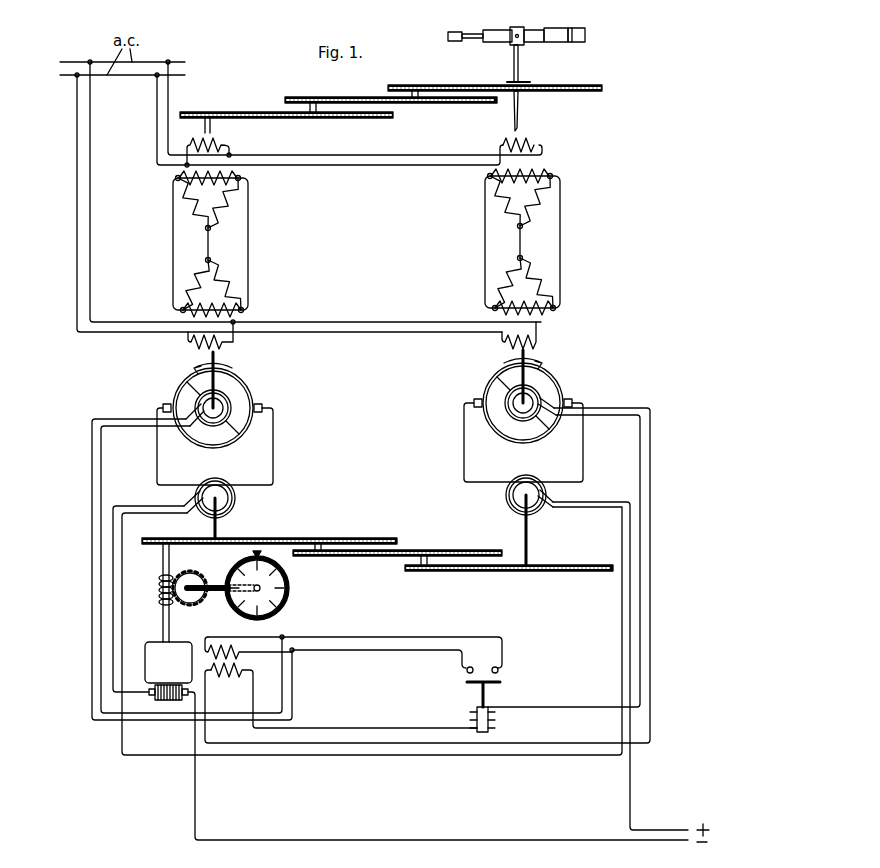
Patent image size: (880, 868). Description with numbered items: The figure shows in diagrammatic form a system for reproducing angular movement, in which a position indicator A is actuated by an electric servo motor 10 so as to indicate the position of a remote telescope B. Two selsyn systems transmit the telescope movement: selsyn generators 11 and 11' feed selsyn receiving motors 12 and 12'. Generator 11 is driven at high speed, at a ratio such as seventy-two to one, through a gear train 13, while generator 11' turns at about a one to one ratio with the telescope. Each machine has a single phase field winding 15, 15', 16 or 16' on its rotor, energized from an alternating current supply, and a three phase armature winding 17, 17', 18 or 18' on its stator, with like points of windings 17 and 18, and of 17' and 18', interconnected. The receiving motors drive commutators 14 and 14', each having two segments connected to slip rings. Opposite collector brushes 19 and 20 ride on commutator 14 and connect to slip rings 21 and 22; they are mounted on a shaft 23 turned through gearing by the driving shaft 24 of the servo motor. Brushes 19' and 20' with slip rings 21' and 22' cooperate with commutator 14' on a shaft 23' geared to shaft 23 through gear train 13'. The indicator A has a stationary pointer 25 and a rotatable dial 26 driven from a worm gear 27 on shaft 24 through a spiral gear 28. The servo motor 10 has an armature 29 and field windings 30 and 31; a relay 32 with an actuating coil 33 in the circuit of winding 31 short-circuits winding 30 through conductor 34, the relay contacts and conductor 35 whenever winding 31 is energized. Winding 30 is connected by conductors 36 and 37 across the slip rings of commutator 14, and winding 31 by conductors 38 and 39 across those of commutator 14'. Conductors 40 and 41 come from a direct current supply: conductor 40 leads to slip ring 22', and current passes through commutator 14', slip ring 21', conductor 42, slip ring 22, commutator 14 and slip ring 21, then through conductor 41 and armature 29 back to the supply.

The electric servo motor 10 is at (150, 642).
The selsyn generator 11 is at (212, 246).
The selsyn generator 11' is at (541, 245).
The selsyn receiving motor 12 is at (228, 313).
The selsyn receiving motor 12' is at (508, 313).
The gear train 13 is at (391, 93).
The gear train 13' is at (453, 547).
The commutator 14 is at (222, 418).
The commutator 14' is at (540, 416).
The single phase field winding 15 is at (224, 141).
The single phase field winding 15' is at (539, 132).
The single phase field winding 16 is at (231, 342).
The single phase field winding 16' is at (547, 335).
The three phase armature winding 17 is at (231, 199).
The three phase armature winding 17' is at (542, 198).
The three phase armature winding 18 is at (191, 288).
The three phase armature winding 18' is at (558, 286).
The collector brush 19 is at (149, 396).
The collector brush 19' is at (461, 387).
The collector brush 20 is at (285, 401).
The collector brush 20' is at (601, 394).
The slip ring 21 is at (259, 518).
The slip ring 21' is at (508, 530).
The slip ring 22 is at (243, 498).
The slip ring 22' is at (509, 495).
The shaft 23 is at (269, 532).
The shaft 23' is at (551, 542).
The driving shaft 24 is at (172, 563).
The stationary pointer 25 is at (283, 562).
The rotatable dial 26 is at (286, 608).
The worm gear 27 is at (162, 580).
The spiral gear 28 is at (200, 603).
The armature 29 is at (167, 702).
The field winding 30 is at (244, 653).
The field winding 31 is at (246, 675).
The relay 32 is at (476, 694).
The actuating coil 33 is at (490, 715).
The conductor 34 is at (387, 652).
The conductor 35 is at (410, 638).
The conductor 36 is at (101, 536).
The conductor 37 is at (92, 562).
The conductor 38 is at (640, 563).
The conductor 39 is at (650, 585).
The conductor 40 is at (672, 830).
The conductor 41 is at (113, 632).
The conductor 42 is at (122, 662).
The position indicator A is at (271, 591).
The remote telescope B is at (533, 30).